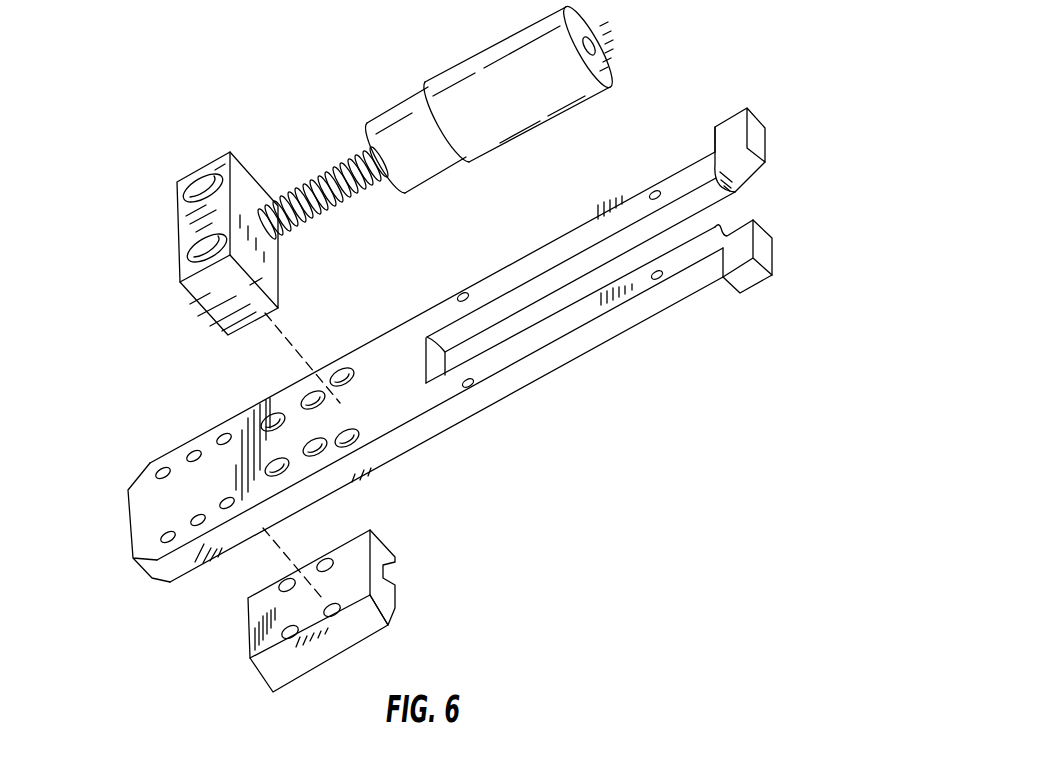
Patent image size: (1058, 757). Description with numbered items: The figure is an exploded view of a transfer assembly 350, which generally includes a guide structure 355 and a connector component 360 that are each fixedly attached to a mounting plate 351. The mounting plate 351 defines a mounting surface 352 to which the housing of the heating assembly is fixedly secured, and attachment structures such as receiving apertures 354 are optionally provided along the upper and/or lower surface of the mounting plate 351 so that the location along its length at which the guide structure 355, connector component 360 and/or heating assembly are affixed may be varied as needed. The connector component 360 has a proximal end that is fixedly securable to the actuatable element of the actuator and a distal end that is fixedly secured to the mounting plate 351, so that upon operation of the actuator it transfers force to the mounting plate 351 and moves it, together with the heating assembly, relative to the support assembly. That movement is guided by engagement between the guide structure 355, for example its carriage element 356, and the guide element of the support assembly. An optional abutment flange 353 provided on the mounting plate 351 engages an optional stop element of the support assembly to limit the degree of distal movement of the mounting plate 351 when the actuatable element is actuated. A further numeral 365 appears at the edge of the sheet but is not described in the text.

The transfer assembly 350 is at (810, 60).
The mounting plate 351 is at (503, 383).
The mounting surface 352 is at (158, 438).
The abutment flange 353 is at (773, 258).
The receiving apertures 354 is at (360, 453).
The guide structure 355 is at (298, 694).
The carriage element 356 is at (250, 636).
The connector component 360 is at (270, 88).
The component 365 is at (904, 751).